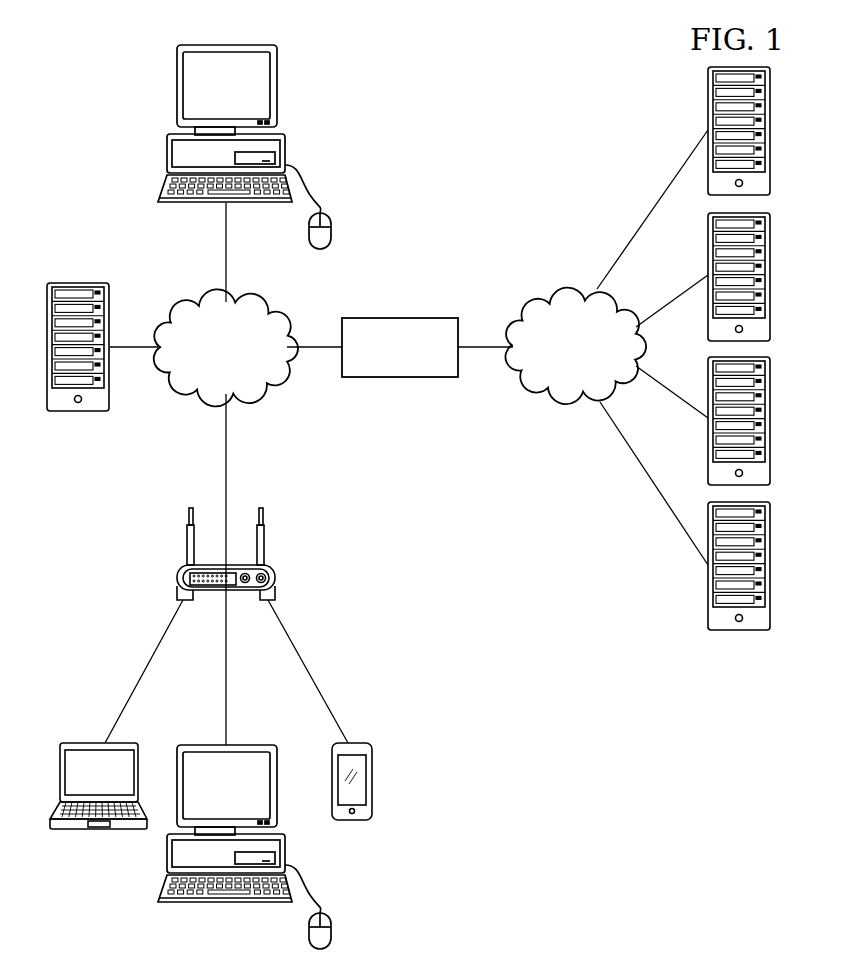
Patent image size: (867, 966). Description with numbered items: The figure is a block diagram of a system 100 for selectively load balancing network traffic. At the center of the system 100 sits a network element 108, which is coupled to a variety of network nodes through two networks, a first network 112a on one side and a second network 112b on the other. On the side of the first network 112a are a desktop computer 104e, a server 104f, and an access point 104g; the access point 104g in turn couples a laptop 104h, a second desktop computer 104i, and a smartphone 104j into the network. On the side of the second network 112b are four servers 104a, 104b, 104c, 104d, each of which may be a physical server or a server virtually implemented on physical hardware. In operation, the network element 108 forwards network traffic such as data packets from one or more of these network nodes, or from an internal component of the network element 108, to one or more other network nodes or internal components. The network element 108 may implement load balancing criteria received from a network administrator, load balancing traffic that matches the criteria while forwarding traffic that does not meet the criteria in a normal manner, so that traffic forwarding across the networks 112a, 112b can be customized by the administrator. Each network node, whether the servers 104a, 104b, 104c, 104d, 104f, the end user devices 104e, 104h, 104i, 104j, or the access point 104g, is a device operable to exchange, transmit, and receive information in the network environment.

The system 100 is at (580, 729).
The server 104a is at (773, 110).
The server 104b is at (773, 255).
The server 104c is at (773, 440).
The server 104d is at (773, 585).
The desktop computer 104e is at (177, 87).
The server 104f is at (80, 283).
The access point 104g is at (187, 556).
The laptop 104h is at (80, 830).
The desktop computer 104i is at (207, 901).
The smartphone 104j is at (373, 782).
The network element 108 is at (400, 318).
The network 112a is at (165, 298).
The network 112b is at (574, 287).